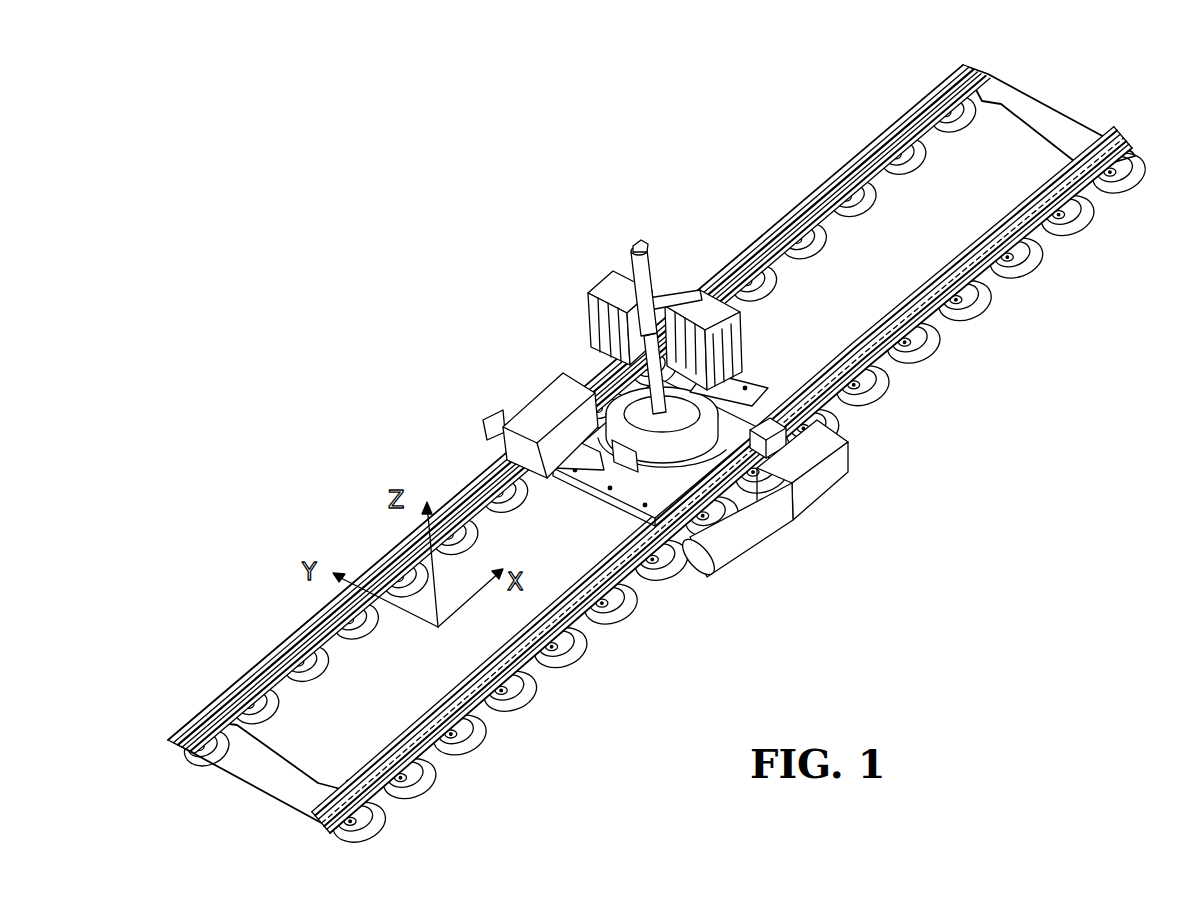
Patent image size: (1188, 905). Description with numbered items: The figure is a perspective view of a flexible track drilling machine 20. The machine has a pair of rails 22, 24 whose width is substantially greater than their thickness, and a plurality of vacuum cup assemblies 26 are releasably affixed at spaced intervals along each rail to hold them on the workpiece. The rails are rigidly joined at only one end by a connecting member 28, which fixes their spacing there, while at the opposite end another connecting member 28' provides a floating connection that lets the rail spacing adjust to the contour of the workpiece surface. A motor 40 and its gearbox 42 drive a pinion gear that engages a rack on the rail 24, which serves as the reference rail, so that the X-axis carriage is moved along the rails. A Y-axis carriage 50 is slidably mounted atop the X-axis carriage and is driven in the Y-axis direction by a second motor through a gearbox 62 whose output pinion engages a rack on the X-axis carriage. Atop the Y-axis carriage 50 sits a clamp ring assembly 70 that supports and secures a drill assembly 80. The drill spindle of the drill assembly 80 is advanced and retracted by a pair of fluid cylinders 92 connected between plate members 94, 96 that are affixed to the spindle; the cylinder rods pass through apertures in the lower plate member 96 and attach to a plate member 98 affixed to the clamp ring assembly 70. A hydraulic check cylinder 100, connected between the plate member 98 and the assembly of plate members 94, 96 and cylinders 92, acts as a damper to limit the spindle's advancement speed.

The machine 20 is at (497, 122).
The rail 22 is at (893, 126).
The rail 24 is at (1088, 210).
The vacuum cup assemblies 26 is at (297, 690).
The connecting member 28 is at (260, 789).
The connecting member 28' is at (1060, 119).
The motor 40 is at (747, 527).
The gearbox 42 is at (822, 472).
The Y-axis carriage 50 is at (622, 497).
The gearbox 62 is at (542, 420).
The clamp ring assembly 70 is at (572, 493).
The drill assembly 80 is at (596, 277).
The fluid cylinders 92 is at (610, 327).
The plate member 94 is at (693, 310).
The plate member 96 is at (723, 376).
The plate member 98 is at (757, 443).
The hydraulic check cylinder 100 is at (648, 262).